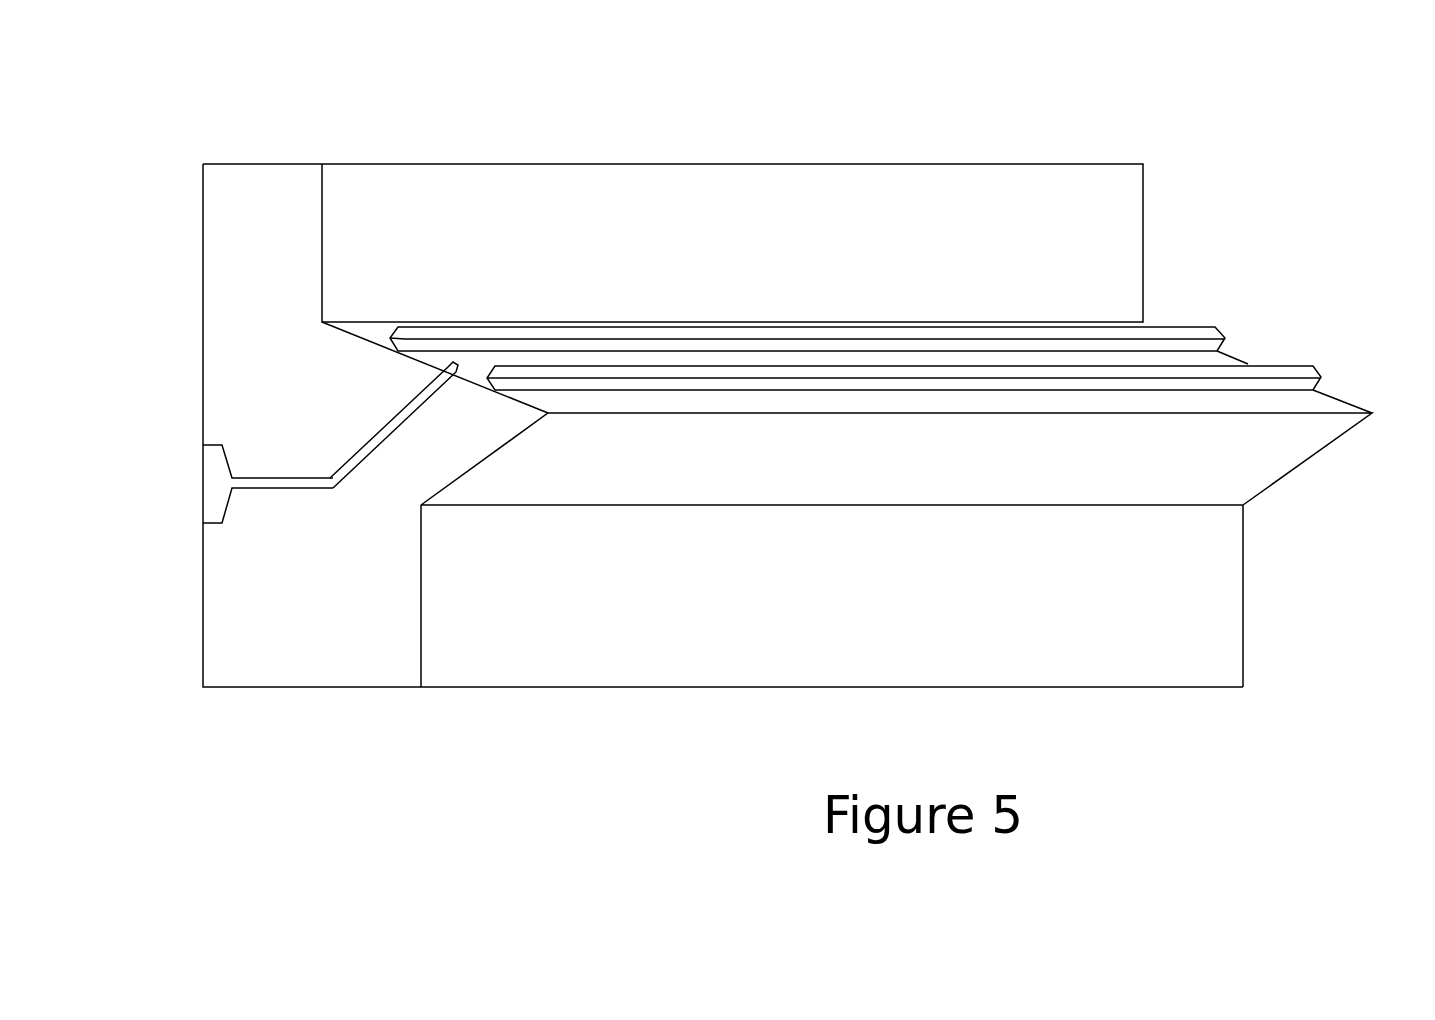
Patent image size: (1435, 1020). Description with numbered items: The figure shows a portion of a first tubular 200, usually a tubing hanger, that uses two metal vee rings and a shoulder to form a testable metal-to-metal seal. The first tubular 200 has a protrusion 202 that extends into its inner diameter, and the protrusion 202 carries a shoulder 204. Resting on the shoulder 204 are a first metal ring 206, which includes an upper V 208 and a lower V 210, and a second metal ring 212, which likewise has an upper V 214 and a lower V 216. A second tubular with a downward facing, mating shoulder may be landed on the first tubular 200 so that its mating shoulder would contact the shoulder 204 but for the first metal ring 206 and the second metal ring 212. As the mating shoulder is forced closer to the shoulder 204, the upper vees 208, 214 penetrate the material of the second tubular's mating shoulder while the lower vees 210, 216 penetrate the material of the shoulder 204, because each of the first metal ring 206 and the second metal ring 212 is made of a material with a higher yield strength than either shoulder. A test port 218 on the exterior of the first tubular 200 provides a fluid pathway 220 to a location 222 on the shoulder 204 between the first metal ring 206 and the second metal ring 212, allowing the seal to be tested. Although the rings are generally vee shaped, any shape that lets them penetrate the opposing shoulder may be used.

The first tubular 200 is at (242, 208).
The protrusion 202 is at (321, 645).
The shoulder 204 is at (355, 335).
The first metal ring 206 is at (1183, 377).
The upper V 208 is at (503, 368).
The lower V 210 is at (497, 386).
The second metal ring 212 is at (1167, 340).
The upper V 214 is at (420, 327).
The lower V 216 is at (407, 340).
The test port 218 is at (222, 485).
The fluid pathway 220 is at (363, 458).
The location 222 is at (570, 357).